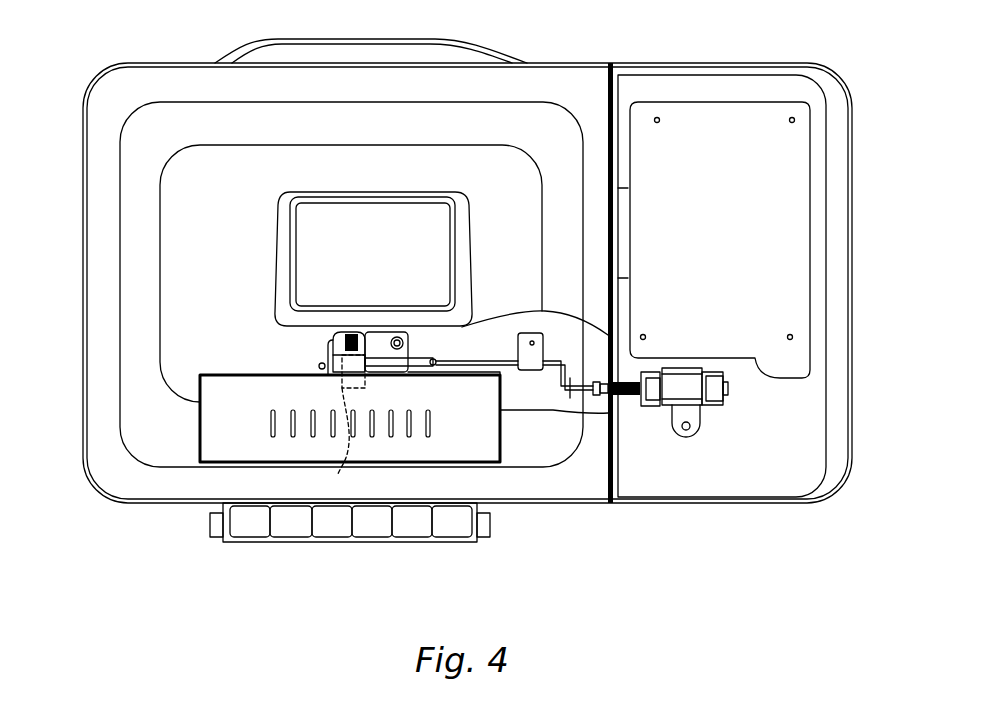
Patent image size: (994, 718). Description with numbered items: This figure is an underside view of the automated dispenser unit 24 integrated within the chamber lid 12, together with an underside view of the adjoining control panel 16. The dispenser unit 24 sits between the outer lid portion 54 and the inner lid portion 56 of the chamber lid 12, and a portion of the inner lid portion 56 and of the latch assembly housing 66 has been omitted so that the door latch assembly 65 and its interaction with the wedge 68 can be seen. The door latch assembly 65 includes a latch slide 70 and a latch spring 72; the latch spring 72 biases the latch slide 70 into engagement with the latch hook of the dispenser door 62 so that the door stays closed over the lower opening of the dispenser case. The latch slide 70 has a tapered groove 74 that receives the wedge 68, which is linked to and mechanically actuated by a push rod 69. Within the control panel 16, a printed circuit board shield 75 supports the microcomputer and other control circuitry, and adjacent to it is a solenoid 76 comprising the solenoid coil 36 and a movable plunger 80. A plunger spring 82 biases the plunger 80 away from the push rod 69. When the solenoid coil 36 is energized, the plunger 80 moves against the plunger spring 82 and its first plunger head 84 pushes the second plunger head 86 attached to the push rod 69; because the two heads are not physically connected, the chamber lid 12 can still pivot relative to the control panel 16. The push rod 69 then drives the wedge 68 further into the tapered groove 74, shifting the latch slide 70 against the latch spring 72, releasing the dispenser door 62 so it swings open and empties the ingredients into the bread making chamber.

The chamber lid 12 is at (82, 280).
The control panel 16 is at (775, 88).
The dispenser unit 24 is at (176, 441).
The solenoid coil 36 is at (710, 395).
The outer lid portion 54 is at (82, 115).
The inner lid portion 56 is at (158, 130).
The dispenser door 62 is at (235, 442).
The door latch assembly 65 is at (318, 353).
The latch assembly housing 66 is at (417, 342).
The wedge 68 is at (388, 370).
The push rod 69 is at (560, 392).
The latch slide 70 is at (338, 378).
The latch spring 72 is at (348, 333).
The tapered groove 74 is at (346, 424).
The printed circuit board shield 75 is at (797, 135).
The solenoid 76 is at (743, 395).
The plunger 80 is at (637, 406).
The plunger spring 82 is at (625, 377).
The first plunger head 84 is at (590, 416).
The second plunger head 86 is at (600, 372).